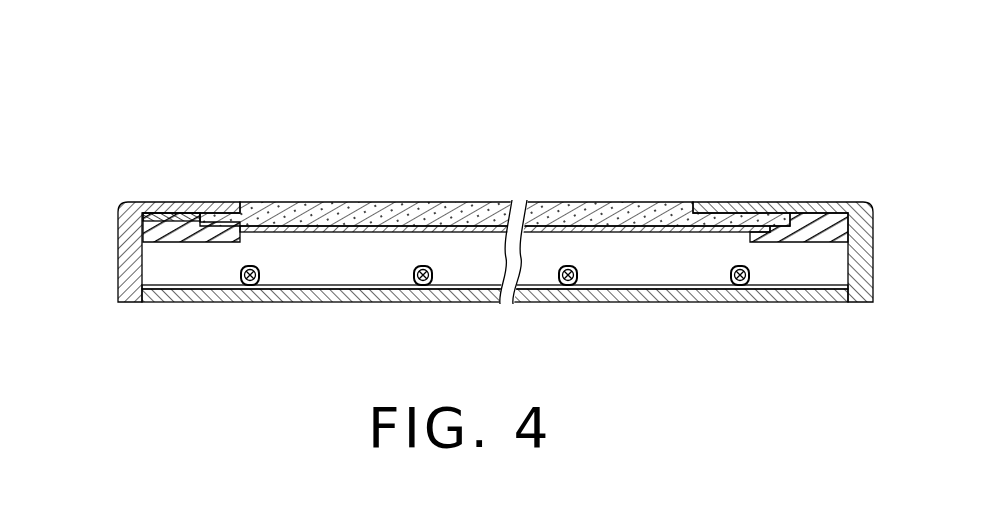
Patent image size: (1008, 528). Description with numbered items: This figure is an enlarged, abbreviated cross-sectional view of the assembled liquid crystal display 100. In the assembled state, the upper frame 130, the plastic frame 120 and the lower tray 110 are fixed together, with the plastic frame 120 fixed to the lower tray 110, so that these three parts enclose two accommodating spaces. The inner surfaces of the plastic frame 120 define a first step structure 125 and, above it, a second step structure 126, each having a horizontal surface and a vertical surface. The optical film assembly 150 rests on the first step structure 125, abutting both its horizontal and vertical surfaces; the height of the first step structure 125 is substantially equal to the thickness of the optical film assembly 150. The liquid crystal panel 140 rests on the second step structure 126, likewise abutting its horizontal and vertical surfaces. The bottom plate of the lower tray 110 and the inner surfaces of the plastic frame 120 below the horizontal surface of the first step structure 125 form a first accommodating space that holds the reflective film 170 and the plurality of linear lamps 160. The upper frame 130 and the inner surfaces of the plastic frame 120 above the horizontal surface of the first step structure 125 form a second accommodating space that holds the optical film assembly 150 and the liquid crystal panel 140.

The liquid crystal display 100 is at (531, 76).
The lower tray 110 is at (183, 302).
The plastic frame 120 is at (455, 221).
The first step structure 125 is at (230, 230).
The second step structure 126 is at (210, 213).
The upper frame 130 is at (163, 202).
The liquid crystal panel 140 is at (643, 203).
The optical film assembly 150 is at (477, 227).
The linear lamps 160 is at (425, 266).
The reflective film 170 is at (313, 300).